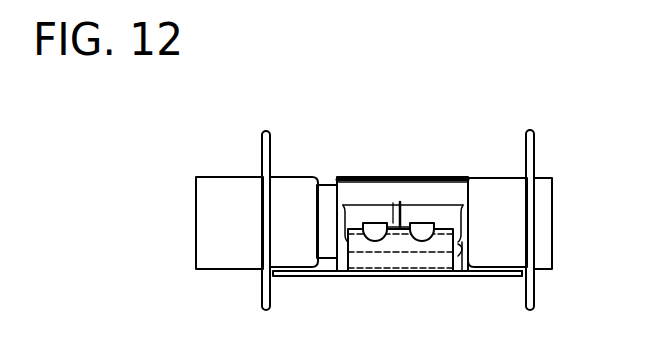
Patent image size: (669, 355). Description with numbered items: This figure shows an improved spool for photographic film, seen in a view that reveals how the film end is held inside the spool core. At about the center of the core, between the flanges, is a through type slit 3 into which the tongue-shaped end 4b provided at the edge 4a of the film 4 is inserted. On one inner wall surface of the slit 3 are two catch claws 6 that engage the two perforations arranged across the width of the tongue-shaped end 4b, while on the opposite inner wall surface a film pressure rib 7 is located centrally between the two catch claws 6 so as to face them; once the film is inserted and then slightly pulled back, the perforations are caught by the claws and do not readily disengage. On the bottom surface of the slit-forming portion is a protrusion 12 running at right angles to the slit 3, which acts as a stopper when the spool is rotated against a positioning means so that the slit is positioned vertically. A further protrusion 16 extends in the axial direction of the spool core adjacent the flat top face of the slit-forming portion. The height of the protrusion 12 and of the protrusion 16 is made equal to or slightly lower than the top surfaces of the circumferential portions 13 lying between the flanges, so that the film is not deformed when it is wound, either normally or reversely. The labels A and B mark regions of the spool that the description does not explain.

The housing 3 is at (356, 205).
The base plate 4 is at (428, 279).
The base plate end portion 4a is at (500, 278).
The base block 4b is at (382, 262).
The contact 6 is at (371, 223).
The pin 7 is at (398, 202).
The step portion 12 is at (329, 266).
The end block 13 is at (297, 254).
The top wall 16 is at (431, 182).
The connector assembly A is at (449, 174).
The mounting plate B is at (288, 175).